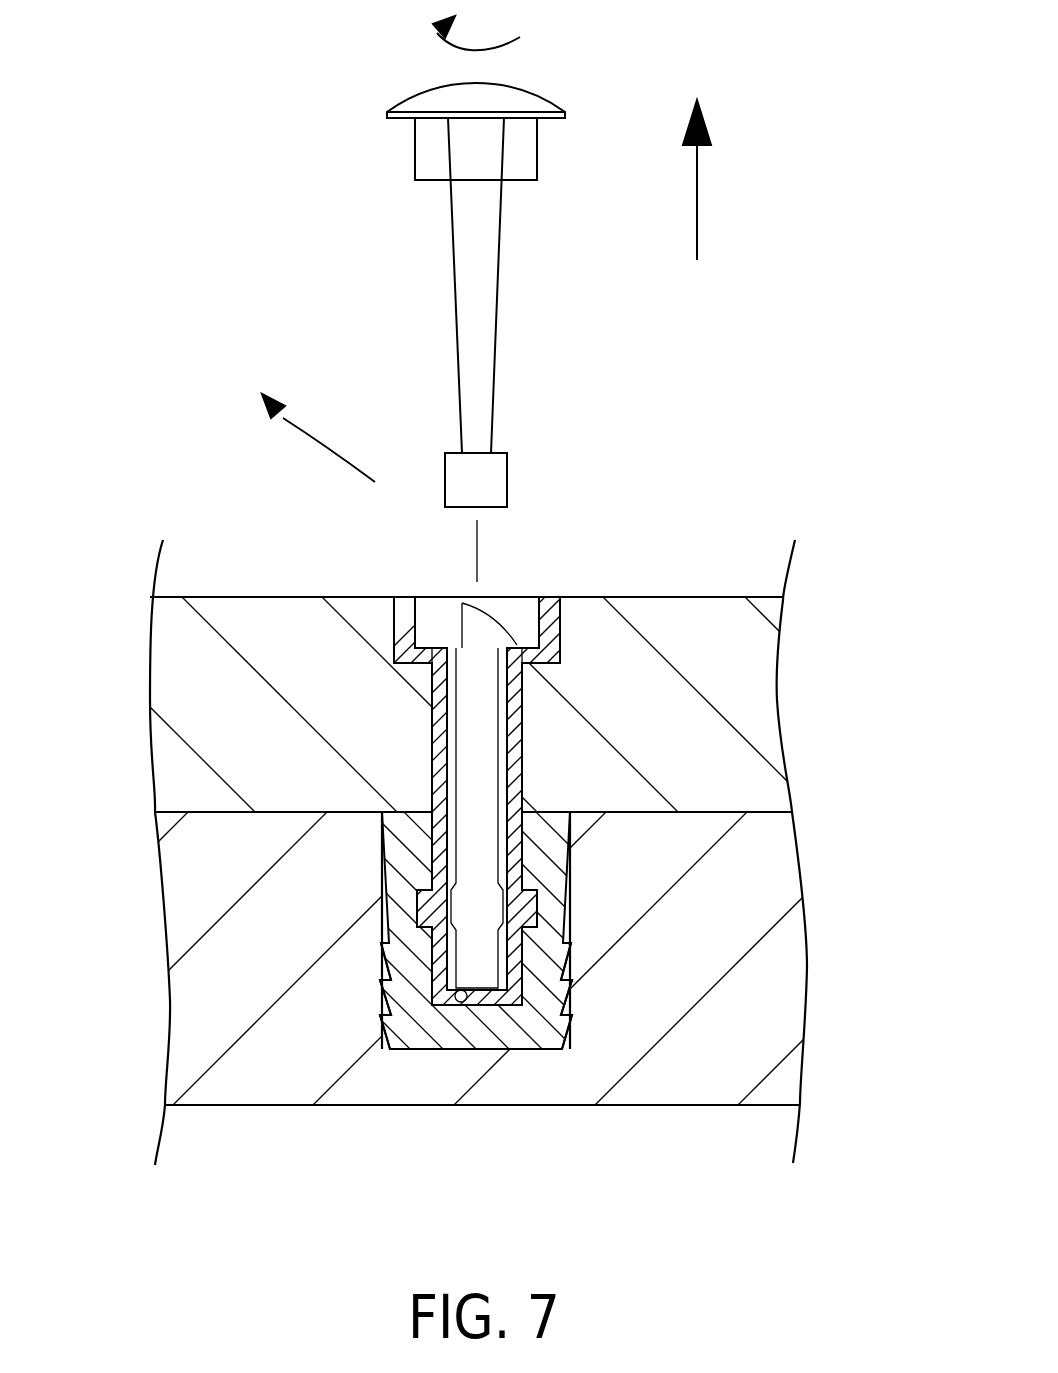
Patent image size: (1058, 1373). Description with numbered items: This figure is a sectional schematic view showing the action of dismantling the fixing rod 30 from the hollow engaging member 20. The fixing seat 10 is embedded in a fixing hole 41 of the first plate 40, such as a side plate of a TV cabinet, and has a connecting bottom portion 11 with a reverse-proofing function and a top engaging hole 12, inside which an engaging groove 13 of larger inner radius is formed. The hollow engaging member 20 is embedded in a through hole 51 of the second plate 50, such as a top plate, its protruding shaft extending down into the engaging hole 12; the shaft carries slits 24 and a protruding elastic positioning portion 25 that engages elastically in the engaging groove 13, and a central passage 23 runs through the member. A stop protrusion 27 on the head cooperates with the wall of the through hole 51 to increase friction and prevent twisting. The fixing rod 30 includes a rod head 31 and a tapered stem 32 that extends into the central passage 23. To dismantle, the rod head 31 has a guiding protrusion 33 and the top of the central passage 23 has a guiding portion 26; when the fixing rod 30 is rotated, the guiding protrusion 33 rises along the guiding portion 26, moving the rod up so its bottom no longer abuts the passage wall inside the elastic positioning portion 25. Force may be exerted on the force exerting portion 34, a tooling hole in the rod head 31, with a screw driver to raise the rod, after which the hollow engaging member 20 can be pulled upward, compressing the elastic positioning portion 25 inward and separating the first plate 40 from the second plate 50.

The fixing seat 10 is at (433, 1049).
The connecting bottom portion 11 is at (570, 1049).
The engaging hole 12 is at (458, 1000).
The engaging groove 13 is at (572, 970).
The hollow engaging member 20 is at (413, 720).
The central passage 23 is at (446, 703).
The slits 24 is at (498, 992).
The elastic positioning portion 25 is at (526, 886).
The guiding portion 26 is at (488, 627).
The stop protrusion 27 is at (397, 630).
The fixing rod 30 is at (398, 165).
The rod head 31 is at (385, 115).
The stem 32 is at (456, 318).
The guiding protrusion 33 is at (537, 170).
The force exerting portion 34 is at (477, 82).
The first plate 40 is at (323, 1105).
The fixing hole 41 is at (381, 1000).
The second plate 50 is at (218, 597).
The through hole 51 is at (431, 790).